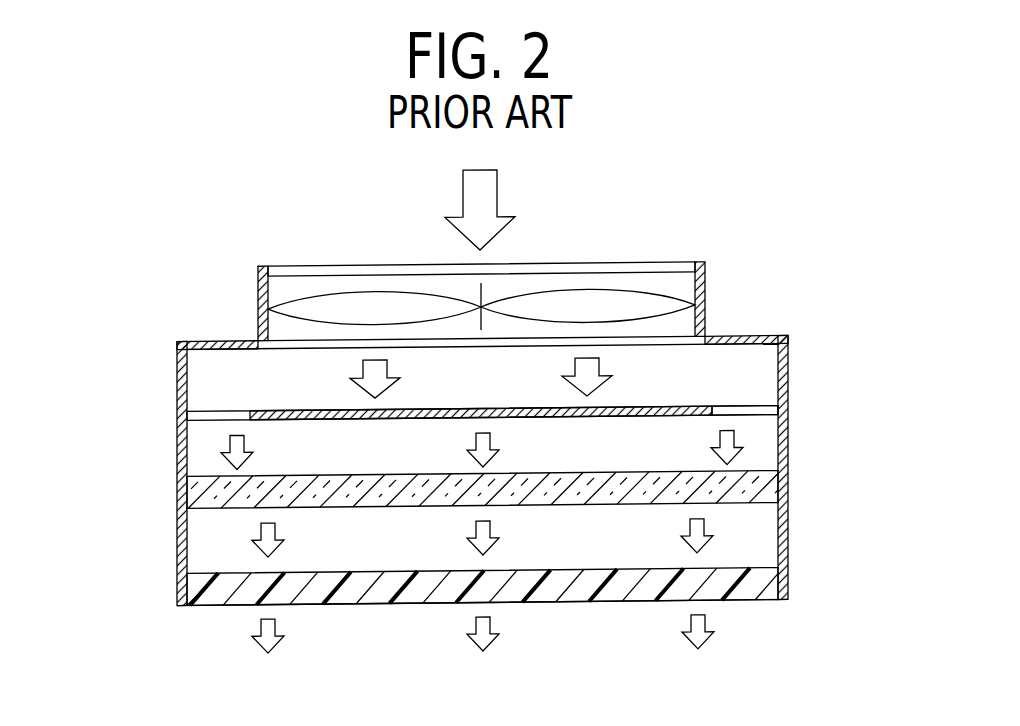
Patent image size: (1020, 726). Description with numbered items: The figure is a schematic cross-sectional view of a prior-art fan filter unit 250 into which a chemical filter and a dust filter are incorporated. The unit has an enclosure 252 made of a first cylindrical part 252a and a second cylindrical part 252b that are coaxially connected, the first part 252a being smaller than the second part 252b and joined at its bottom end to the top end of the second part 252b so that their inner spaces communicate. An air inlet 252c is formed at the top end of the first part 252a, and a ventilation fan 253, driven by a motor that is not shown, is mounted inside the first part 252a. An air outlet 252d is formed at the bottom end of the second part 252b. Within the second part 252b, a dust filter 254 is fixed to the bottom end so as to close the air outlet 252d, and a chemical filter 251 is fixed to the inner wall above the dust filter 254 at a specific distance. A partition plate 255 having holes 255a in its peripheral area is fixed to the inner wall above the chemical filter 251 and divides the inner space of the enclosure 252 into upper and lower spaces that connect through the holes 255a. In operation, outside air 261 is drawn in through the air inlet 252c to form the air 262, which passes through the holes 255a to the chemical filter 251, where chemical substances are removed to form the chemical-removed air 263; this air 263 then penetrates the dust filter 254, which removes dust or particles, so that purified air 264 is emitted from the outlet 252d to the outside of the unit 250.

The fan filter unit 250 is at (725, 215).
The chemical filter 251 is at (772, 487).
The enclosure 252 is at (468, 427).
The first cylindrical part 252a is at (259, 311).
The second cylindrical part 252b is at (177, 465).
The air inlet 252c is at (350, 272).
The air outlet 252d is at (212, 597).
The ventilation fan 253 is at (600, 298).
The dust filter 254 is at (772, 587).
The partition plate 255 is at (688, 408).
The holes 255a is at (750, 408).
The outside air 261 is at (497, 202).
The introduced air 262 is at (387, 378).
The chemical-removed air 263 is at (490, 533).
The purified air 264 is at (491, 631).